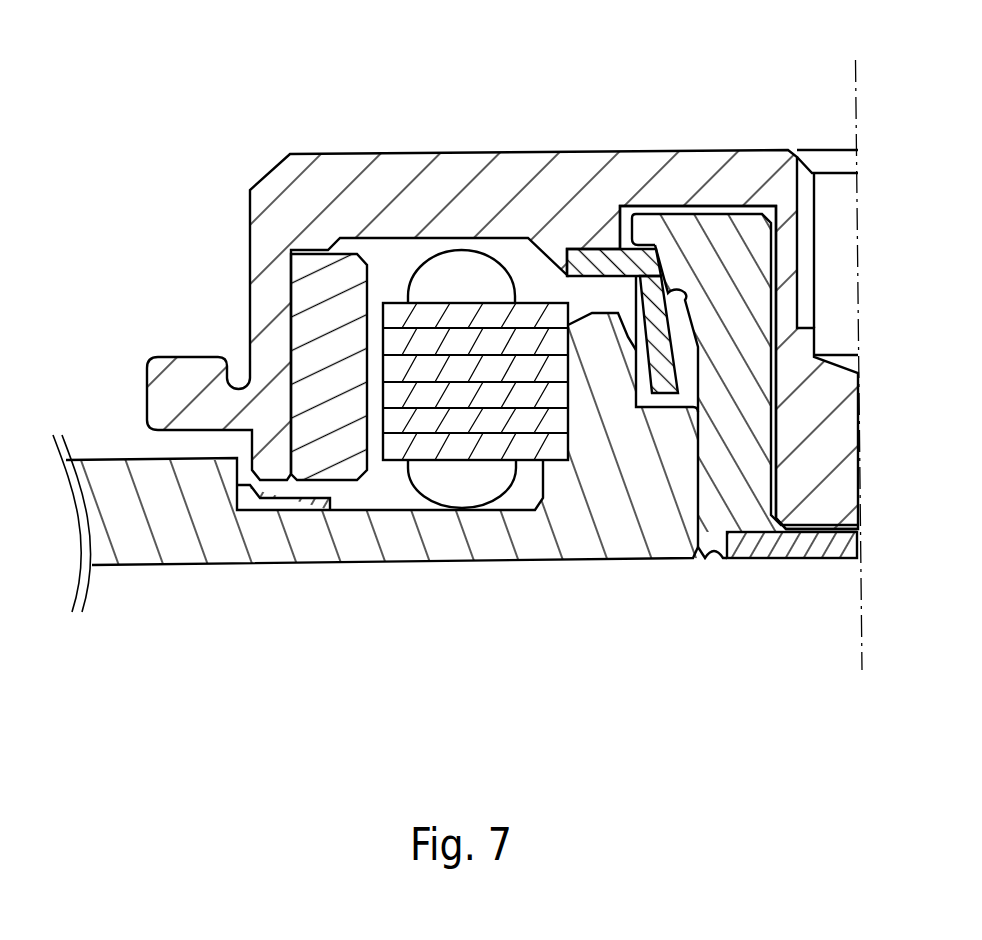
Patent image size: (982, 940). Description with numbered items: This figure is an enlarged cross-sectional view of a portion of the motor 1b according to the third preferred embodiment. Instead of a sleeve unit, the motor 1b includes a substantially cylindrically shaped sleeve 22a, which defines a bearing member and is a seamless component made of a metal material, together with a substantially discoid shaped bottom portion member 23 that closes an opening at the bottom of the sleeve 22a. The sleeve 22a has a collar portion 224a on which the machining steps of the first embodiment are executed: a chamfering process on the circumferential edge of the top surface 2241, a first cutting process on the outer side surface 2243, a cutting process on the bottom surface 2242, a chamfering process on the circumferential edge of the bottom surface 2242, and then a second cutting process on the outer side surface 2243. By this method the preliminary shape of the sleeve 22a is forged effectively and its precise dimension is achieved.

The motor 1b is at (273, 115).
The sleeve 22a is at (728, 462).
The bottom portion member 23 is at (817, 550).
The collar portion 224a is at (655, 218).
The top surface 2241 is at (647, 203).
The bottom surface 2242 is at (622, 227).
The outer side surface 2243 is at (612, 232).